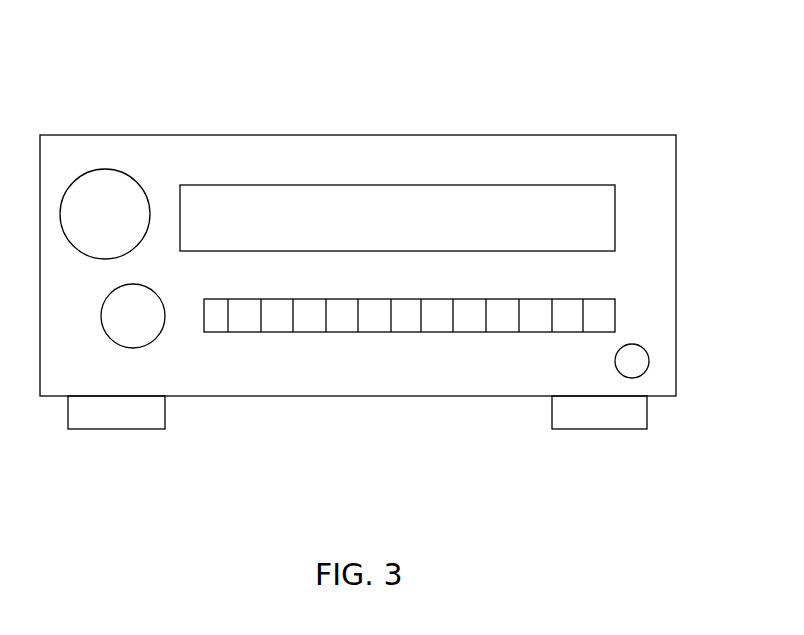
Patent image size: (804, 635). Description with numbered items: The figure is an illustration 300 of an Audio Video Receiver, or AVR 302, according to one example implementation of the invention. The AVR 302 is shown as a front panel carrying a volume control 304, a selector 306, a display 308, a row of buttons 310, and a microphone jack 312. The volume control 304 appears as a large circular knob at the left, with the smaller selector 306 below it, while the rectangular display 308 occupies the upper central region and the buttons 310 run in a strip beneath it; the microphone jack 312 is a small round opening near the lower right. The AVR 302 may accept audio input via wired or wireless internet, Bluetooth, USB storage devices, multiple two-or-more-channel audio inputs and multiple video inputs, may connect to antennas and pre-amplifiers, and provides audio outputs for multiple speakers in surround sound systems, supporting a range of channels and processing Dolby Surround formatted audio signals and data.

The illustration 300 is at (378, 262).
The Audio Video Receiver 302 is at (104, 375).
The volume control 304 is at (122, 224).
The selector 306 is at (151, 326).
The display 308 is at (416, 227).
The buttons 310 is at (228, 332).
The microphone jack 312 is at (643, 374).